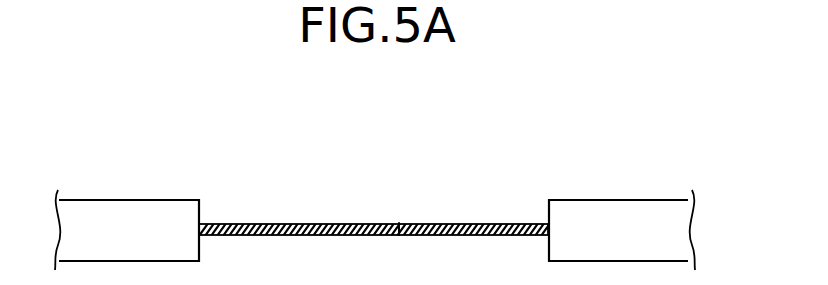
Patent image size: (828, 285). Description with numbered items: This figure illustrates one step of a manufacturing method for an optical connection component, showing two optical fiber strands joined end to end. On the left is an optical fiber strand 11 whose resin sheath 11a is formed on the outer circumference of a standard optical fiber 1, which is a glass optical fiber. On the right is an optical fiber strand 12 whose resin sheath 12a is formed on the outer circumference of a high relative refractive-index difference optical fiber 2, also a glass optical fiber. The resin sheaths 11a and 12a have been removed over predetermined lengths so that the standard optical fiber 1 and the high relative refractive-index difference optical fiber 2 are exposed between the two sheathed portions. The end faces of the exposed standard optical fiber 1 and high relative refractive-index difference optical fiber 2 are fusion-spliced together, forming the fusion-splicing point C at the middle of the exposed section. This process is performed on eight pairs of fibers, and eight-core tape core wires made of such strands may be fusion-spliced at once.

The optical fiber strand 11 is at (133, 173).
The resin sheath 11a is at (119, 200).
The optical fiber strand 12 is at (622, 173).
The resin sheath 12a is at (622, 200).
The standard optical fiber 1 is at (297, 224).
The high relative refractive-index difference optical fiber 2 is at (474, 224).
The fusion-splicing point C is at (400, 216).